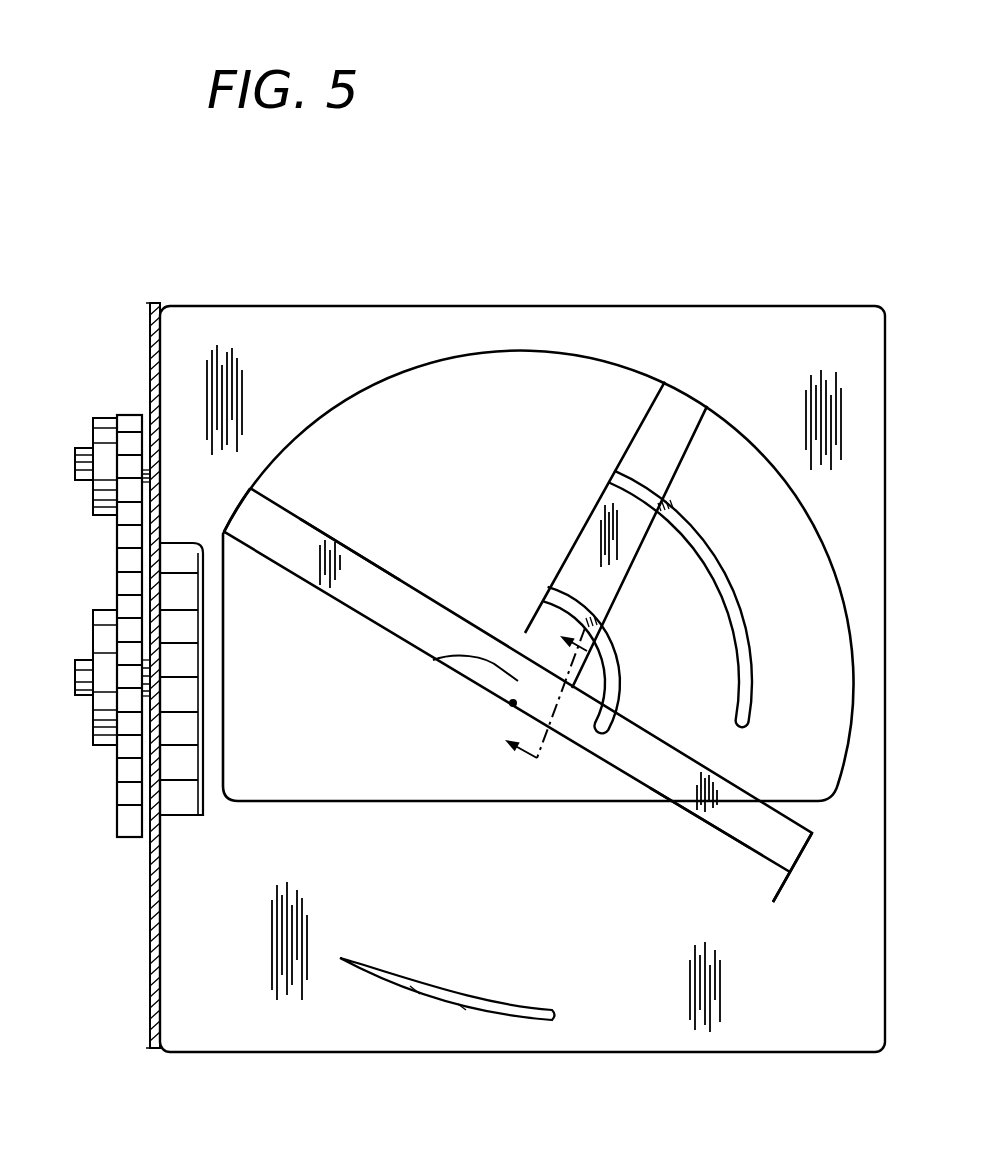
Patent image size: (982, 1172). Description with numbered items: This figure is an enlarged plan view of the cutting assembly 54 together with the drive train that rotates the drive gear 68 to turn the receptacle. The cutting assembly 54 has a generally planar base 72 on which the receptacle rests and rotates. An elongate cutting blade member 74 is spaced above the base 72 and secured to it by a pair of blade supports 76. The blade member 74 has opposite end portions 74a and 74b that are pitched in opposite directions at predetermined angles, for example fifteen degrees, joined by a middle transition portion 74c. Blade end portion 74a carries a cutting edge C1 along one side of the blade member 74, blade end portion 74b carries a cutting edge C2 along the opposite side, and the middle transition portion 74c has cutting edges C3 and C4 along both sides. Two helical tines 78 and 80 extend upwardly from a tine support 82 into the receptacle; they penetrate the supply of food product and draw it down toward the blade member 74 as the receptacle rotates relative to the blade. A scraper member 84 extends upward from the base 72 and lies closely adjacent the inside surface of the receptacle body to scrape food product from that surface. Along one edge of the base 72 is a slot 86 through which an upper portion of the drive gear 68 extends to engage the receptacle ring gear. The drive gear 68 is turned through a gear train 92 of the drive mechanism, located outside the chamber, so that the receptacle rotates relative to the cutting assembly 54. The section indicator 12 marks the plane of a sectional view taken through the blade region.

The section line 12 is at (528, 691).
The cutting assembly 54 is at (389, 302).
The drive gear 68 is at (180, 804).
The base 72 is at (613, 963).
The cutting blade member 74 is at (522, 695).
The blade end portion 74a is at (358, 580).
The blade end portion 74b is at (737, 798).
The middle transition portion 74c is at (433, 660).
The blade supports 76 is at (263, 490).
The helical tine 78 is at (613, 671).
The helical tine 80 is at (748, 670).
The tine support 82 is at (593, 528).
The scraper member 84 is at (400, 985).
The slot 86 is at (201, 802).
The gear train 92 is at (110, 583).
The cutting edge C1 is at (422, 590).
The cutting edge C2 is at (686, 810).
The cutting edge C3 is at (513, 703).
The cutting edge C4 is at (530, 655).